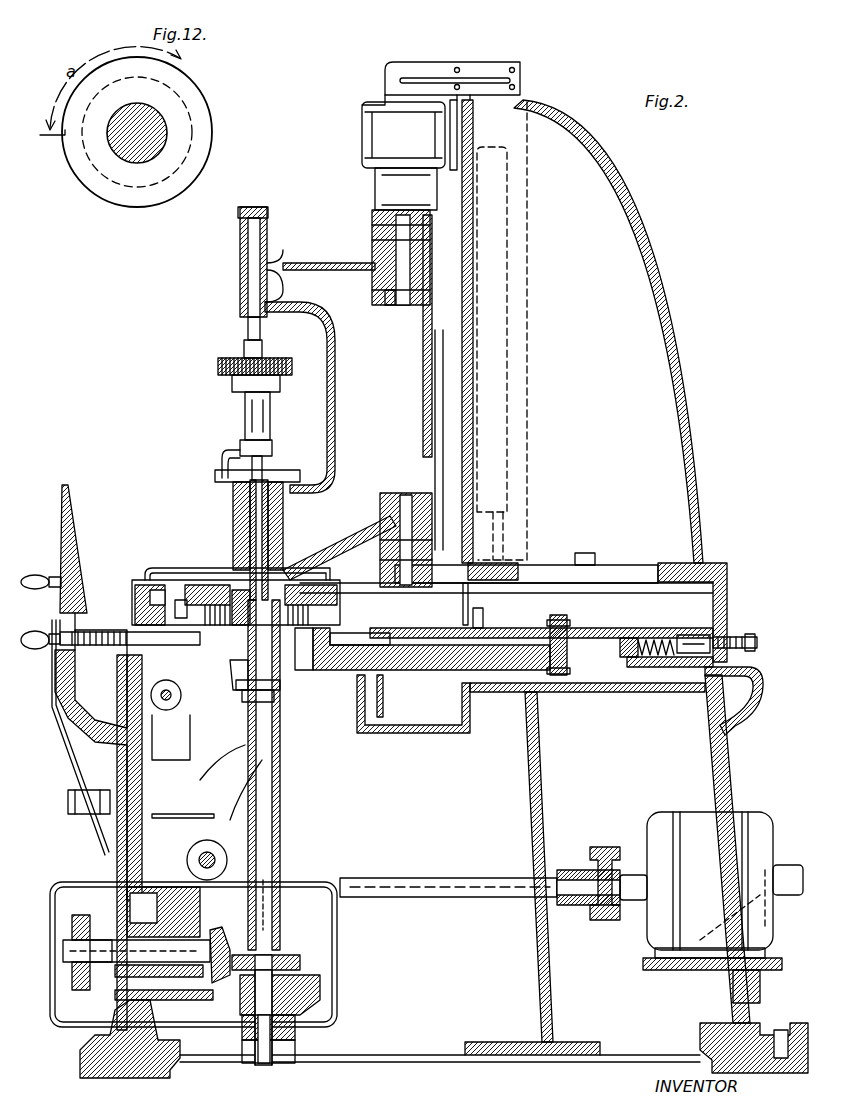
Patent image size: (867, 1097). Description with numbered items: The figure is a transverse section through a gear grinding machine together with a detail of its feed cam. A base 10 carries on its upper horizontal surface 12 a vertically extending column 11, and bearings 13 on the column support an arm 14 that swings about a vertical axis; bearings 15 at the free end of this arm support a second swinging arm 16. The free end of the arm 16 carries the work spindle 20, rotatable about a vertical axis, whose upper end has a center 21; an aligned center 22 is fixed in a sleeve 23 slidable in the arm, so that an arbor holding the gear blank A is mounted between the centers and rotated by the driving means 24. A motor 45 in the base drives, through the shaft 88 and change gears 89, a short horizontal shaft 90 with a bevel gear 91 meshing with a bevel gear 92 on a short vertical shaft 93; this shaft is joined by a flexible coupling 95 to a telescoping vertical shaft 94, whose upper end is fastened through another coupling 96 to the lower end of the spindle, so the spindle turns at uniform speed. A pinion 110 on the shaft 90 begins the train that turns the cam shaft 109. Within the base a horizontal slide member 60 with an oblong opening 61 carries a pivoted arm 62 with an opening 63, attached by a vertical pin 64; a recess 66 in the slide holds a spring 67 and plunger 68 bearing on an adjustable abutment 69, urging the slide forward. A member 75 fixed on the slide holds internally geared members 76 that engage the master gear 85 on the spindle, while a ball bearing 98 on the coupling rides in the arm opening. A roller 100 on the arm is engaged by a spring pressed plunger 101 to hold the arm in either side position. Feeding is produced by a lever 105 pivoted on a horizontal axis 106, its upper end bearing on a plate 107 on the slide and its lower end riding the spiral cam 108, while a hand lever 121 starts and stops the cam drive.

In FIG. 2, the base 10 is at (735, 725).
In FIG. 2, the column 11 is at (668, 298).
In FIG. 2, the upper horizontal surface 12 is at (605, 580).
In FIG. 2, the bearings 13 is at (388, 105).
In FIG. 2, the arm 14 is at (372, 232).
In FIG. 2, the bearings 15 is at (390, 300).
In FIG. 2, the arm 16 is at (327, 420).
In FIG. 2, the work spindle 20 is at (235, 505).
In FIG. 2, the center 21 is at (263, 466).
In FIG. 2, the center 22 is at (246, 328).
In FIG. 2, the sleeve 23 is at (240, 272).
In FIG. 2, the driving means 24 is at (228, 470).
In FIG. 2, the gear blank A is at (220, 372).
In FIG. 2, the motor 45 is at (690, 812).
In FIG. 2, the slide member 60 is at (585, 628).
In FIG. 2, the oblong opening 61 is at (342, 670).
In FIG. 2, the arm 62 is at (430, 670).
In FIG. 2, the opening 63 is at (300, 670).
In FIG. 2, the pin 64 is at (570, 670).
In FIG. 2, the recess 66 is at (672, 625).
In FIG. 2, the spring 67 is at (652, 630).
In FIG. 2, the plunger 68 is at (695, 632).
In FIG. 2, the adjustable abutment 69 is at (752, 635).
In FIG. 2, the member 75 is at (135, 590).
In FIG. 2, the members 76 is at (180, 598).
In FIG. 2, the master gear 85 is at (236, 590).
In FIG. 2, the shaft 88 is at (430, 878).
In FIG. 2, the change gears 89 is at (70, 915).
In FIG. 2, the shaft 90 is at (112, 935).
In FIG. 2, the bevel gear 91 is at (215, 930).
In FIG. 2, the bevel gear 92 is at (322, 980).
In FIG. 2, the shaft 93 is at (296, 1040).
In FIG. 2, the vertical shaft 94 is at (282, 805).
In FIG. 2, the coupling 95 is at (280, 955).
In FIG. 2, the coupling 96 is at (285, 700).
In FIG. 2, the ball bearing 98 is at (232, 665).
In FIG. 2, the roller 100 is at (225, 660).
In FIG. 2, the spring pressed plunger 101 is at (125, 628).
In FIG. 2, the lever 105 is at (222, 775).
In FIG. 2, the horizontal axis 106 is at (125, 740).
In FIG. 2, the bearing plate 107 is at (132, 680).
In FIG. 12, the cam 108 is at (193, 168).
In FIG. 2, the cam 108 is at (210, 842).
In FIG. 12, the cam shaft 109 is at (158, 133).
In FIG. 2, the cam shaft 109 is at (222, 858).
In FIG. 2, the pinion 110 is at (95, 975).
In FIG. 2, the hand lever 121 is at (56, 760).